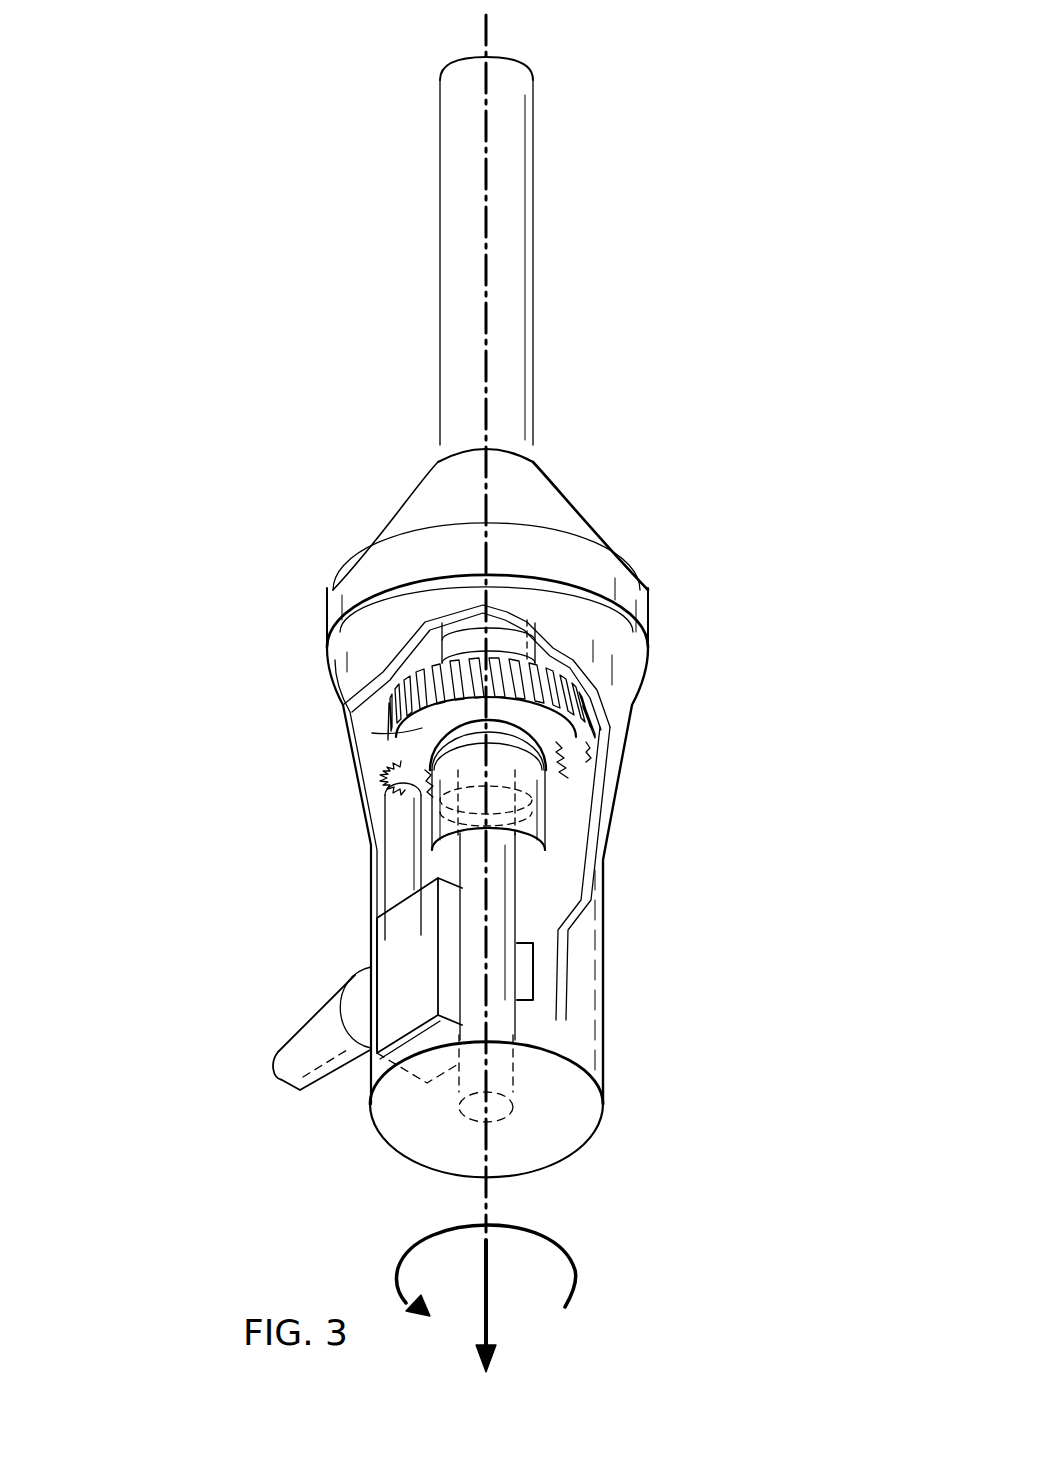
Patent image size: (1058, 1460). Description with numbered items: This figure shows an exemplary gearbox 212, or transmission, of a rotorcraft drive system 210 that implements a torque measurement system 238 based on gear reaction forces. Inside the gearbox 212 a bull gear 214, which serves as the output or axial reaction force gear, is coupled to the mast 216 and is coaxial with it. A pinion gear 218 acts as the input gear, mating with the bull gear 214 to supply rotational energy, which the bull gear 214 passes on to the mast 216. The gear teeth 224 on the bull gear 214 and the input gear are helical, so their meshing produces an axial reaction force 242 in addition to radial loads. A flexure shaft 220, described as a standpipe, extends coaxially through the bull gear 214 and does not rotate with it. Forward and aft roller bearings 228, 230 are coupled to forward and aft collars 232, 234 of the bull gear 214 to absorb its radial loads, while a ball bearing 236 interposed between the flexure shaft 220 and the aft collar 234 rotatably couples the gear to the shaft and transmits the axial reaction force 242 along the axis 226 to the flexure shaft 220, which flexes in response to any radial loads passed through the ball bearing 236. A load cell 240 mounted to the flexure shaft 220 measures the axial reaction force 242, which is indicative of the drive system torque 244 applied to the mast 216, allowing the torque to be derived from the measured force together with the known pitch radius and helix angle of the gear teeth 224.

The rotorcraft drive system 210 is at (176, 103).
The gearbox 212 is at (604, 1058).
The bull gear 214 is at (367, 733).
The mast 216 is at (534, 272).
The pinion gear 218 is at (374, 770).
The flexure shaft 220 is at (517, 913).
The gear teeth 224 is at (553, 667).
The axis 226 is at (486, 40).
The forward roller bearing 228 is at (493, 647).
The aft roller bearing 230 is at (557, 803).
The forward collar 232 is at (472, 642).
The aft collar 234 is at (457, 842).
The ball bearing 236 is at (573, 800).
The torque measurement system 238 is at (733, 972).
The load cell 240 is at (537, 970).
The axial reaction force 242 is at (490, 1325).
The drive system torque 244 is at (574, 1280).